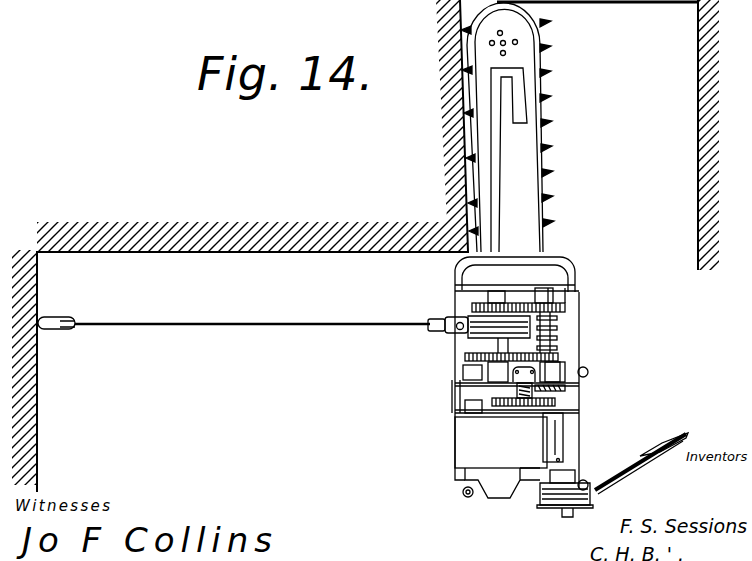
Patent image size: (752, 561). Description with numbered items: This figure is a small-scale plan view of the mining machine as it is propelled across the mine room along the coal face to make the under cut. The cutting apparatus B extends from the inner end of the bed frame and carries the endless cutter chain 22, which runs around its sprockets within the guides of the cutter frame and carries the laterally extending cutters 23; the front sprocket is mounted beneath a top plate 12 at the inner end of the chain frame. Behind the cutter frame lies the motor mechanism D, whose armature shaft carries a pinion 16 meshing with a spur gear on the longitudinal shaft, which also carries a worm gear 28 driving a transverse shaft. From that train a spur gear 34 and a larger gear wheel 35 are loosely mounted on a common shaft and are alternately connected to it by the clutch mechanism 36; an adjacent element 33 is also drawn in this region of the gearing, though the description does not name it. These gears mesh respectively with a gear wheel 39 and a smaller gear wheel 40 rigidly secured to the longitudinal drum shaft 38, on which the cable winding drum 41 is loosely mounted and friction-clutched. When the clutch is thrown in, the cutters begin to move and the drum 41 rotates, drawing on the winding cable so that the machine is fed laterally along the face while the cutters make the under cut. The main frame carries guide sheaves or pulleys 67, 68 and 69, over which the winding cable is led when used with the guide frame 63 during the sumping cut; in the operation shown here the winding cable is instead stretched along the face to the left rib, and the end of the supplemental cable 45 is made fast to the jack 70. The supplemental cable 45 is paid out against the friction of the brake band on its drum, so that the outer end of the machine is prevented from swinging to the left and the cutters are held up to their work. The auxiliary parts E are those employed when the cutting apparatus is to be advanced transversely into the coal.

The top plate 12 is at (527, 27).
The cutting apparatus B is at (523, 127).
The endless cutter chain 22 is at (567, 123).
The cutters 23 is at (560, 178).
The guide frame 63 is at (517, 372).
The gear wheel 40 is at (472, 306).
The gear wheel 35 is at (565, 310).
The clutch mechanism 36 is at (572, 325).
The spur gear 34 is at (573, 357).
The guide pulley 69 is at (589, 375).
The rack bar 33 is at (562, 386).
The cable winding drum 41 is at (470, 333).
The drum shaft 38 is at (462, 357).
The gear wheel 39 is at (463, 370).
The worm gear 28 is at (502, 403).
The pinion 16 is at (530, 413).
The motor mechanism D is at (501, 442).
The supplemental cable 45 is at (640, 462).
The jack 70 is at (680, 436).
The guide pulley 68 is at (586, 486).
The guide pulley 67 is at (497, 496).
The auxiliary parts E is at (571, 500).